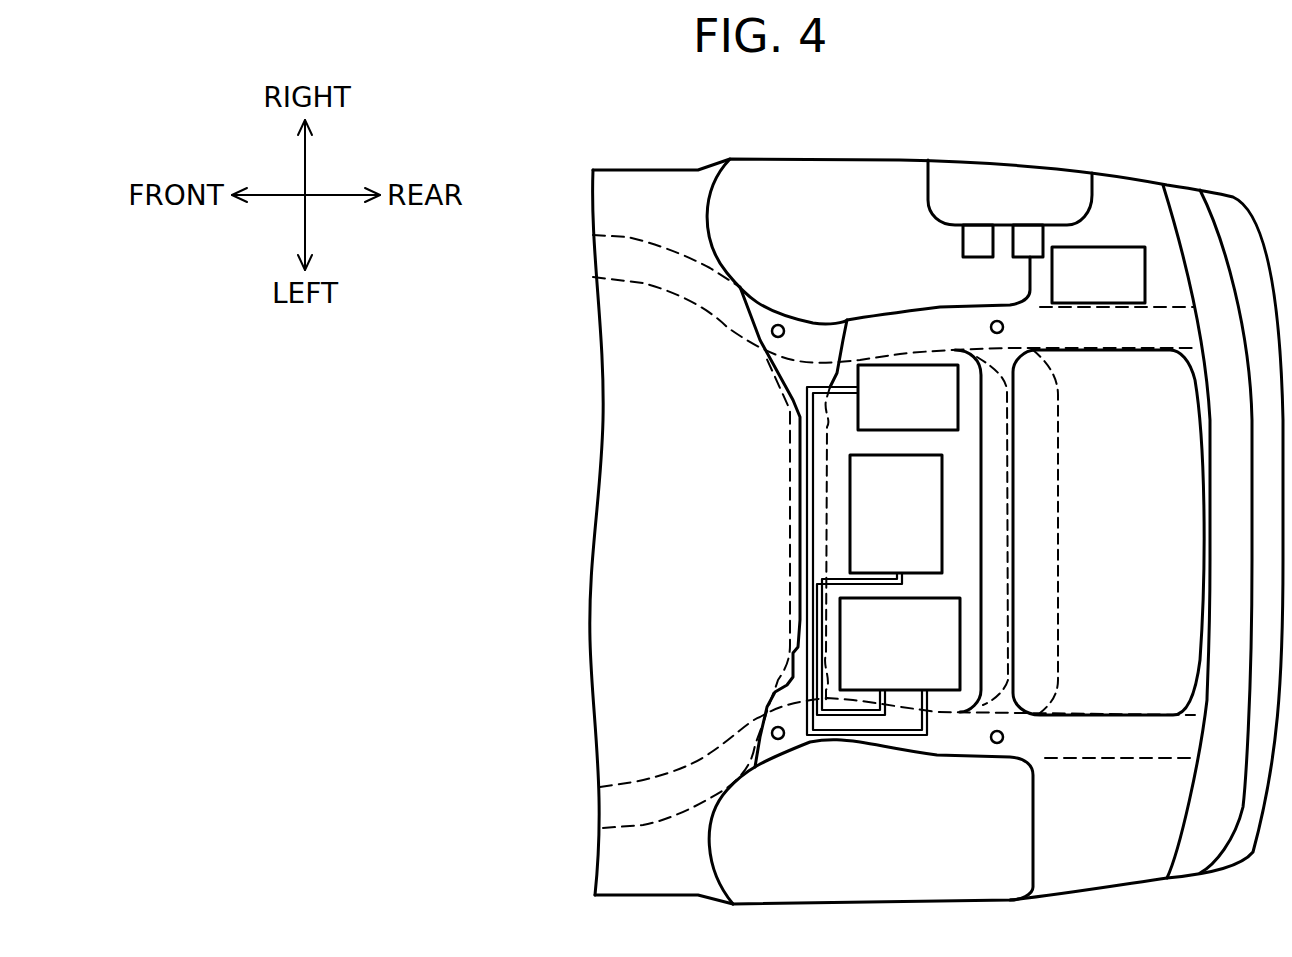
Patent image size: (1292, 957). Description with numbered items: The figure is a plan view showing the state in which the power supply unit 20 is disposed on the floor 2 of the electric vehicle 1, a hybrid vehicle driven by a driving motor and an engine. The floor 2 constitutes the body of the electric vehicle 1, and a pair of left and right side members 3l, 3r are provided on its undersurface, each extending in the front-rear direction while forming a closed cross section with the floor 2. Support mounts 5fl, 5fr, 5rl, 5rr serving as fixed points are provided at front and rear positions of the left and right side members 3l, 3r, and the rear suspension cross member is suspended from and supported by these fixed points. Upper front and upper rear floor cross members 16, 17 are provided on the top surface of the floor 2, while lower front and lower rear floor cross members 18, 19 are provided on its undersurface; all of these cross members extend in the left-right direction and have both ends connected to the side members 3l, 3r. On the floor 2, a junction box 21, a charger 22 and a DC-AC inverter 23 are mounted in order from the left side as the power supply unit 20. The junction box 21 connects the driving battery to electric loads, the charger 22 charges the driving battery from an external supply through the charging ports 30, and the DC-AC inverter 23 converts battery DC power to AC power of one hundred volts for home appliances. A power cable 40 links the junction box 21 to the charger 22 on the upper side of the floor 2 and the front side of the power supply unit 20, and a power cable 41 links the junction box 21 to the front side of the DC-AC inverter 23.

The electric vehicle 1 is at (1150, 108).
The floor 2 is at (618, 410).
The right side member 3r is at (620, 237).
The left side member 3l is at (622, 830).
The front right support mount 5fr is at (780, 322).
The rear right support mount 5rr is at (994, 320).
The front left support mount 5fl is at (780, 742).
The rear left support mount 5rl is at (997, 746).
The upper front floor cross member 16 is at (800, 687).
The upper rear floor cross member 17 is at (998, 655).
The lower front floor cross member 18 is at (790, 650).
The lower rear floor cross member 19 is at (1060, 603).
The power supply unit 20 is at (1011, 527).
The junction box 21 is at (950, 612).
The charger 22 is at (930, 505).
The DC-AC inverter 23 is at (938, 405).
The charging ports 30 is at (1030, 233).
The power cable 40 is at (863, 722).
The power cable 41 is at (905, 740).